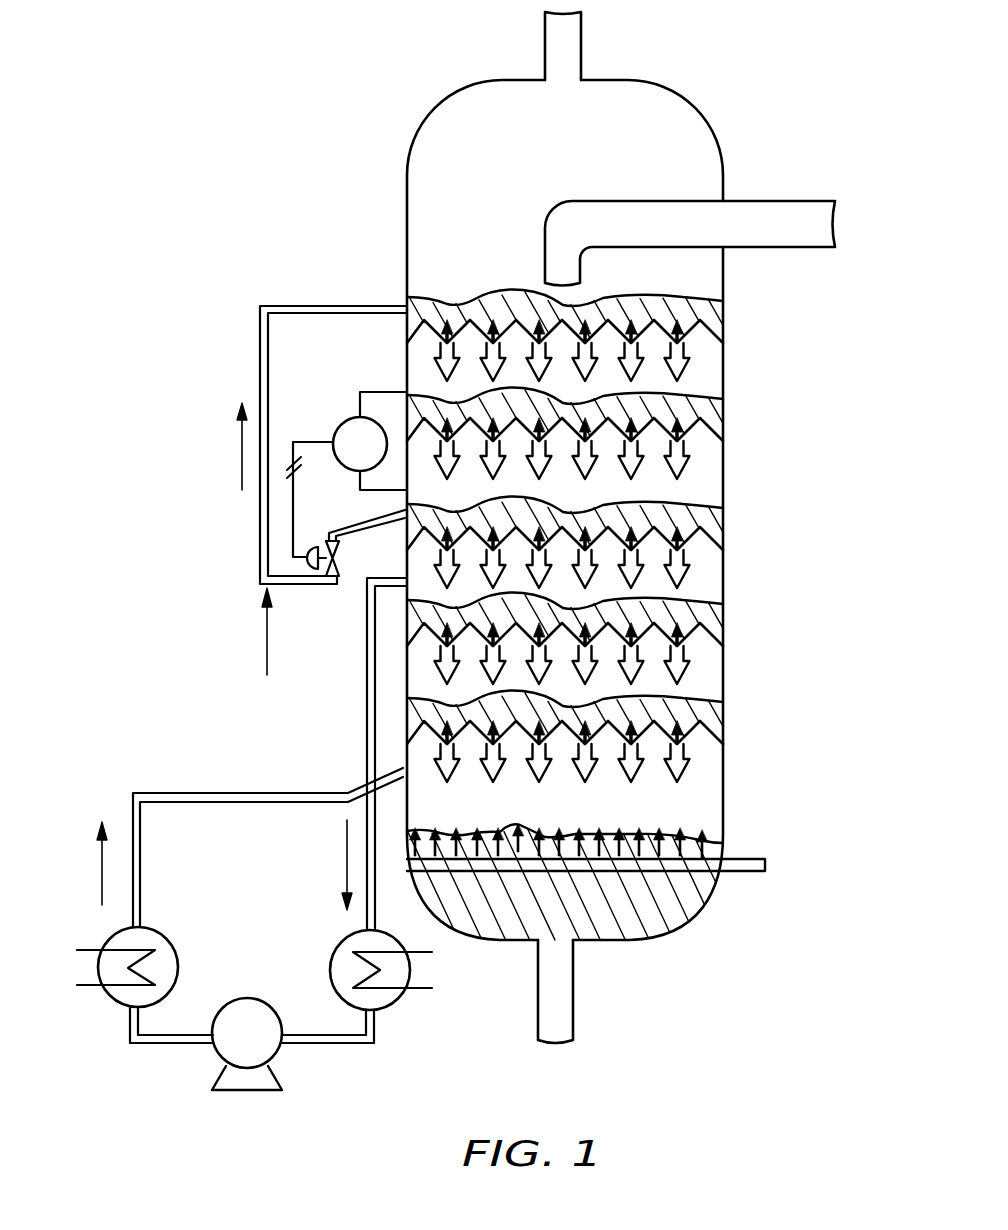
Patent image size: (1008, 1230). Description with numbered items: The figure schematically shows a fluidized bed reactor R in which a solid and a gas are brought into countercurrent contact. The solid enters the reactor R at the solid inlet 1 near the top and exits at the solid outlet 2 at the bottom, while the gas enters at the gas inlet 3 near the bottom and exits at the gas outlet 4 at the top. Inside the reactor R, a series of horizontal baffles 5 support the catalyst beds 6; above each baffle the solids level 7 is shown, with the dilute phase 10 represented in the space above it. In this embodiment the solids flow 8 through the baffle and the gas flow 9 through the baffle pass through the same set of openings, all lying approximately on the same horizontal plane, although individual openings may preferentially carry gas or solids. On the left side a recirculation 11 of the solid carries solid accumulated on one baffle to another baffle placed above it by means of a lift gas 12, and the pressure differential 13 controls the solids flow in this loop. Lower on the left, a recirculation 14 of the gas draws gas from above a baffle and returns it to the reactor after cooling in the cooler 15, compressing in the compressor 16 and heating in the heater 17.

The reactor R is at (448, 97).
The solid inlet 1 is at (838, 229).
The solid outlet 2 is at (558, 1042).
The gas inlet 3 is at (767, 866).
The gas outlet 4 is at (583, 31).
The horizontal baffles 5 is at (698, 636).
The catalyst beds 6 is at (688, 320).
The solids level above baffle 7 is at (724, 410).
The solids flow through the baffle 8 is at (683, 480).
The gas flow through the baffle 9 is at (447, 331).
The dilute phase 10 is at (695, 377).
The recirculation of the solid 11 is at (272, 304).
The lift gas 12 is at (310, 590).
The pressure differential control 13 is at (348, 420).
The recirculation of the gas 14 is at (243, 841).
The cooler 15 is at (392, 1005).
The compressor 16 is at (273, 1057).
The heater 17 is at (110, 1002).